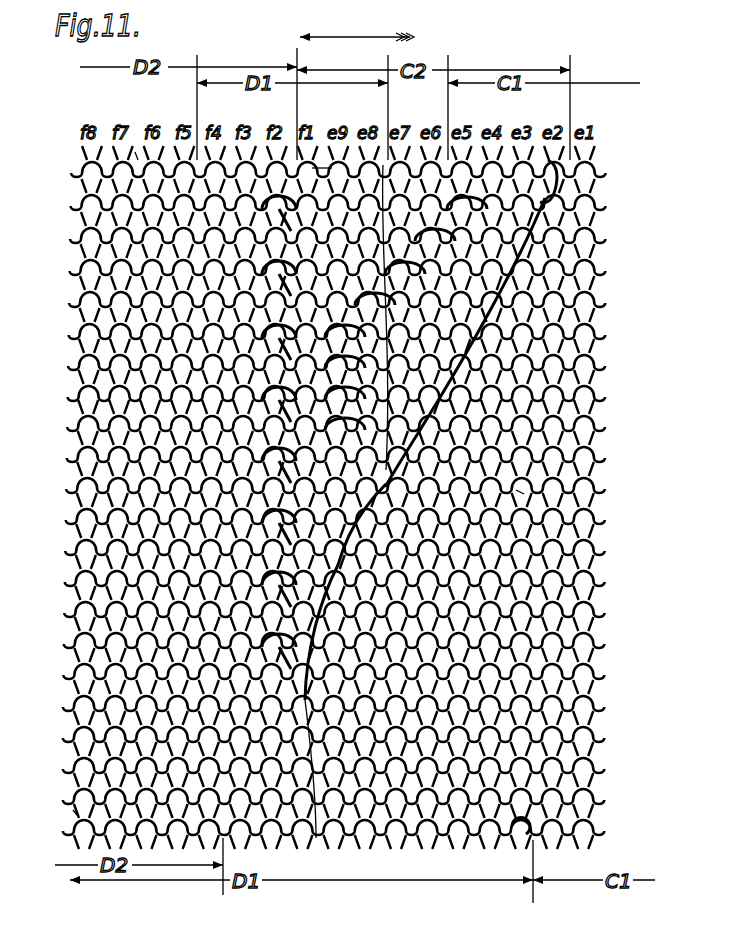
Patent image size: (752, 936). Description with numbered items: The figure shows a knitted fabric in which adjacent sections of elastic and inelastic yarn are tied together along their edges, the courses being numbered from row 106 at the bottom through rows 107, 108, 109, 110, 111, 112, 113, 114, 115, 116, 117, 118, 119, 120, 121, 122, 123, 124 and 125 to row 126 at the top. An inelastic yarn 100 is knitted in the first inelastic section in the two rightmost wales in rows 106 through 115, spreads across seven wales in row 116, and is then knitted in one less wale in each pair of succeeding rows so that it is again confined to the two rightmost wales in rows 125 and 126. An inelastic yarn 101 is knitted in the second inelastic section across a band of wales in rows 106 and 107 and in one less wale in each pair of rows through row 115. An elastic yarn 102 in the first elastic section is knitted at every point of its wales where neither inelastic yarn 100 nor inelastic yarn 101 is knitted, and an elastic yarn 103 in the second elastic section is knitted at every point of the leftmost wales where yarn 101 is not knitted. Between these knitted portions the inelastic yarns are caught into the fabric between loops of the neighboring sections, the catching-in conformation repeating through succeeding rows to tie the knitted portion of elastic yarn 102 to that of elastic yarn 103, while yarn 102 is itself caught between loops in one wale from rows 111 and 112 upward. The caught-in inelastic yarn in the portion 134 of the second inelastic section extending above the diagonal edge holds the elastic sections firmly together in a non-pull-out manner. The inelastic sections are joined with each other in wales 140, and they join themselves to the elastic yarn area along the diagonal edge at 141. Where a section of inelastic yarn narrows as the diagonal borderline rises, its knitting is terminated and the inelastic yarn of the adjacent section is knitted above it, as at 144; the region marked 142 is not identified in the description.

The inelastic yarn 100 is at (378, 512).
The inelastic yarn 101 is at (383, 165).
The elastic yarn 102 is at (545, 160).
The elastic yarn 103 is at (138, 162).
The portion of section D1 134 is at (328, 133).
The wales 140 is at (522, 840).
The diagonal edge 141 is at (438, 264).
The pattern section 142 is at (215, 669).
The terminated knitting point 144 is at (520, 494).
The row 106 is at (359, 800).
The row 107 is at (359, 769).
The row 108 is at (359, 738).
The row 109 is at (359, 707).
The row 110 is at (358, 675).
The row 111 is at (359, 644).
The row 112 is at (359, 613).
The row 113 is at (360, 582).
The row 114 is at (359, 551).
The row 115 is at (360, 520).
The row 116 is at (360, 489).
The row 117 is at (361, 458).
The row 118 is at (360, 427).
The row 119 is at (361, 397).
The row 120 is at (361, 366).
The row 121 is at (362, 335).
The row 122 is at (361, 303).
The row 123 is at (362, 271).
The row 124 is at (362, 239).
The row 125 is at (363, 206).
The row 126 is at (362, 173).